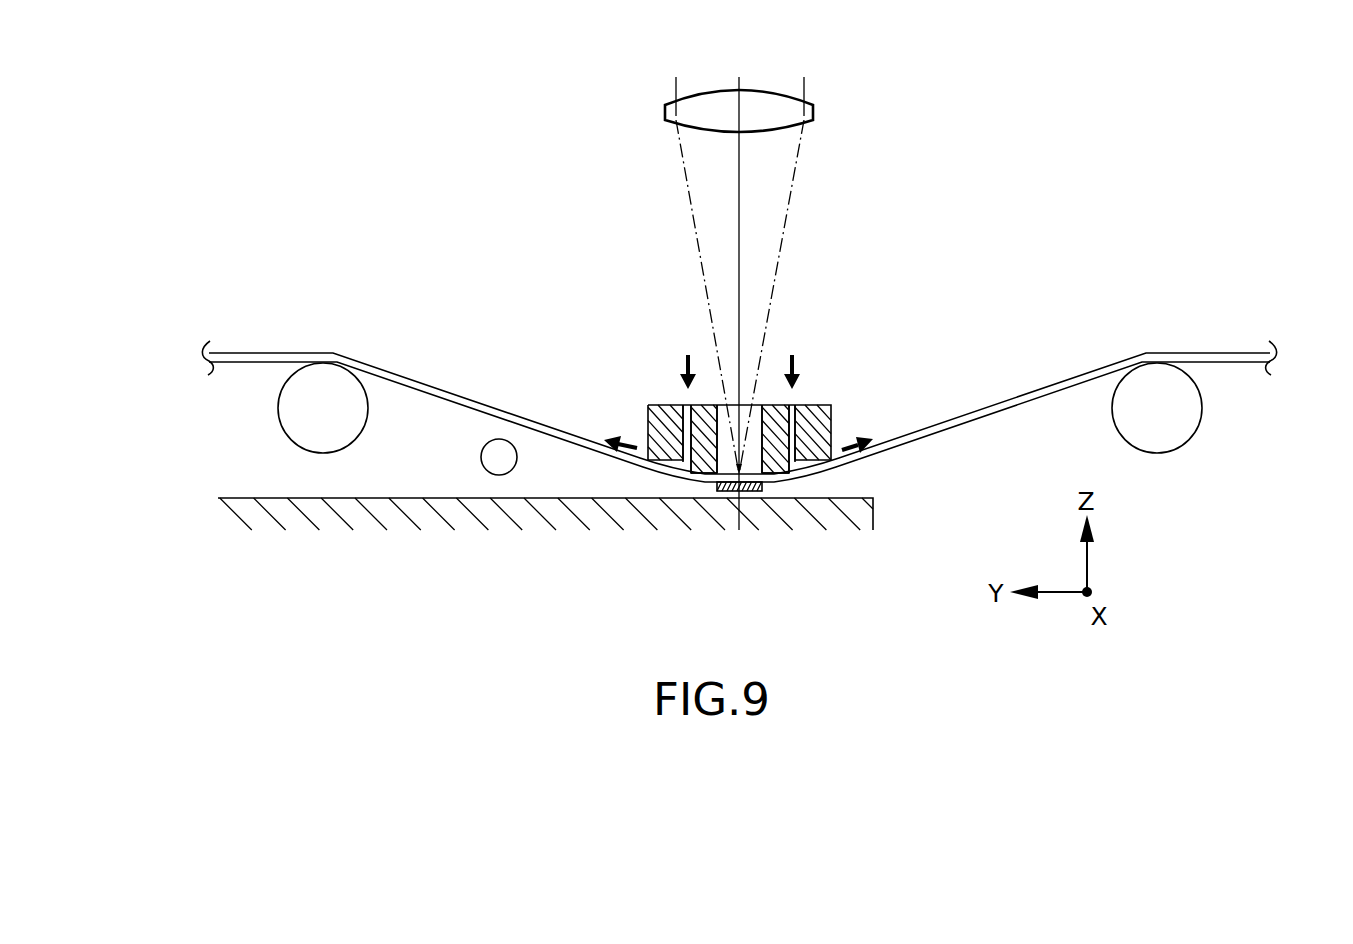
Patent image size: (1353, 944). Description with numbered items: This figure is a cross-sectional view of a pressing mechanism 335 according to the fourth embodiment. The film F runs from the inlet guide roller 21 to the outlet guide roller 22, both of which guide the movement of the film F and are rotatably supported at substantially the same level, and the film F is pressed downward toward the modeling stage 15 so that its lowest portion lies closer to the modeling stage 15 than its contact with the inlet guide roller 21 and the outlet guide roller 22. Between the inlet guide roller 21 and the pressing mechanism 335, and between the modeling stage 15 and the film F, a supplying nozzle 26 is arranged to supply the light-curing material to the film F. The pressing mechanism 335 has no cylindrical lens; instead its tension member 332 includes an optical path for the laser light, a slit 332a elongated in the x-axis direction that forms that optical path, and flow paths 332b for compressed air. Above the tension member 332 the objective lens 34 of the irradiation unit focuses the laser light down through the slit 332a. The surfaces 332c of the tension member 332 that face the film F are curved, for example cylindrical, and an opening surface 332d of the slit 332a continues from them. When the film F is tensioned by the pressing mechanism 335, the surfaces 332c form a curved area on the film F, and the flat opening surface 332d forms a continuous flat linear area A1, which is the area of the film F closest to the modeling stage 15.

The objective lens 34 is at (813, 108).
The pressing mechanism 335 is at (818, 350).
The film F is at (442, 390).
The inlet guide roller 21 is at (320, 387).
The outlet guide roller 22 is at (1163, 387).
The supplying nozzle 26 is at (500, 447).
The modeling stage 15 is at (238, 510).
The tension member 332 is at (833, 415).
The slit 332a is at (720, 413).
The flow paths 332b is at (687, 405).
The surfaces 332c is at (817, 467).
The opening surface 332d is at (758, 491).
The linear area A1 is at (728, 491).